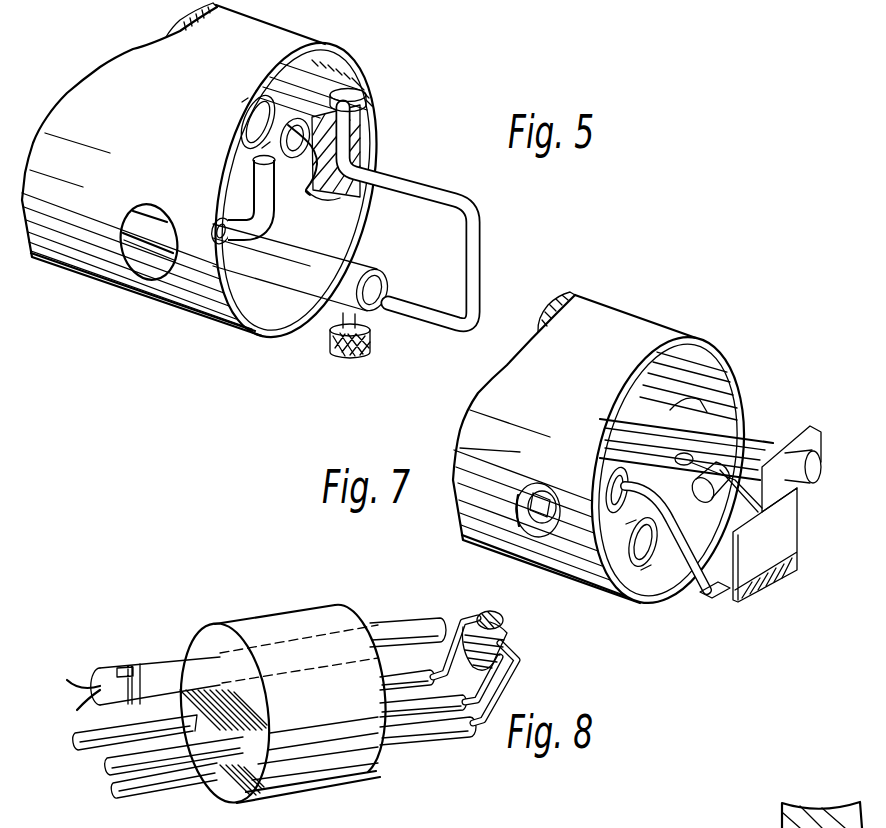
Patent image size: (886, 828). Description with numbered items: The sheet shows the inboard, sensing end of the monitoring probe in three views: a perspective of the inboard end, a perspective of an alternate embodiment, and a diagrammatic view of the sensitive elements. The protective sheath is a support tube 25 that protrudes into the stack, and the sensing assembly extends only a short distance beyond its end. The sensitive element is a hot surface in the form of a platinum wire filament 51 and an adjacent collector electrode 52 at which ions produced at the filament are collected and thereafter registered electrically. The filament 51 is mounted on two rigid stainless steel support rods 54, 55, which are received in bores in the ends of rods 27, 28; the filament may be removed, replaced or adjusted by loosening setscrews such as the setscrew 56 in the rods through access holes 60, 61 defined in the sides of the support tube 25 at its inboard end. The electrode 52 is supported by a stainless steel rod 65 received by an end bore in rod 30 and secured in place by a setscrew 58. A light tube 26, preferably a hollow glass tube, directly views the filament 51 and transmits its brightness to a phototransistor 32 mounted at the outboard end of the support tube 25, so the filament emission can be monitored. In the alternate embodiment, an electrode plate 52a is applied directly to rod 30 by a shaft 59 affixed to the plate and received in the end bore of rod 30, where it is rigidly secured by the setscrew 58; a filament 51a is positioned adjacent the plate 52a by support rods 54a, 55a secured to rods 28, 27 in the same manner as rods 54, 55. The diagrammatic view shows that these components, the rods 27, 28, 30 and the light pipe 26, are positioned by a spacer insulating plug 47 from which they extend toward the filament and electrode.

In FIG. 5, the support tube 25 is at (303, 36).
In FIG. 7, the support tube 25 is at (661, 308).
In FIG. 5, the light tube 26 is at (250, 118).
In FIG. 7, the light tube 26 is at (630, 567).
In FIG. 8, the light tube 26 is at (387, 627).
In FIG. 5, the rod 27 is at (212, 233).
In FIG. 7, the rod 27 is at (603, 468).
In FIG. 8, the rod 27 is at (386, 710).
In FIG. 5, the rod 28 is at (300, 120).
In FIG. 7, the rod 28 is at (675, 458).
In FIG. 8, the rod 28 is at (381, 684).
In FIG. 5, the rod 30 is at (386, 270).
In FIG. 7, the rod 30 is at (758, 442).
In FIG. 8, the rod 30 is at (428, 733).
In FIG. 8, the phototransistor 32 is at (104, 670).
In FIG. 8, the spacer insulating plug 47 is at (294, 614).
In FIG. 5, the wire filament 51 is at (315, 118).
In FIG. 8, the wire filament 51 is at (487, 613).
In FIG. 7, the filament 51a is at (723, 590).
In FIG. 5, the collector electrode 52 is at (345, 146).
In FIG. 8, the collector electrode 52 is at (497, 620).
In FIG. 7, the electrode plate 52a is at (786, 574).
In FIG. 5, the support rod 54 is at (278, 228).
In FIG. 8, the support rod 54 is at (475, 678).
In FIG. 7, the support rod 54a is at (767, 512).
In FIG. 5, the support rod 55 is at (311, 186).
In FIG. 8, the support rod 55 is at (451, 632).
In FIG. 7, the support rod 55a is at (695, 590).
In FIG. 7, the setscrew 56 is at (554, 497).
In FIG. 5, the setscrew 58 is at (360, 354).
In FIG. 7, the setscrew 58 is at (697, 503).
In FIG. 7, the shaft 59 is at (818, 468).
In FIG. 5, the access hole 60 is at (124, 230).
In FIG. 7, the access hole 60 is at (536, 487).
In FIG. 5, the access hole 61 is at (314, 194).
In FIG. 7, the access hole 61 is at (677, 399).
In FIG. 5, the stainless steel rod 65 is at (480, 232).
In FIG. 8, the stainless steel rod 65 is at (518, 658).